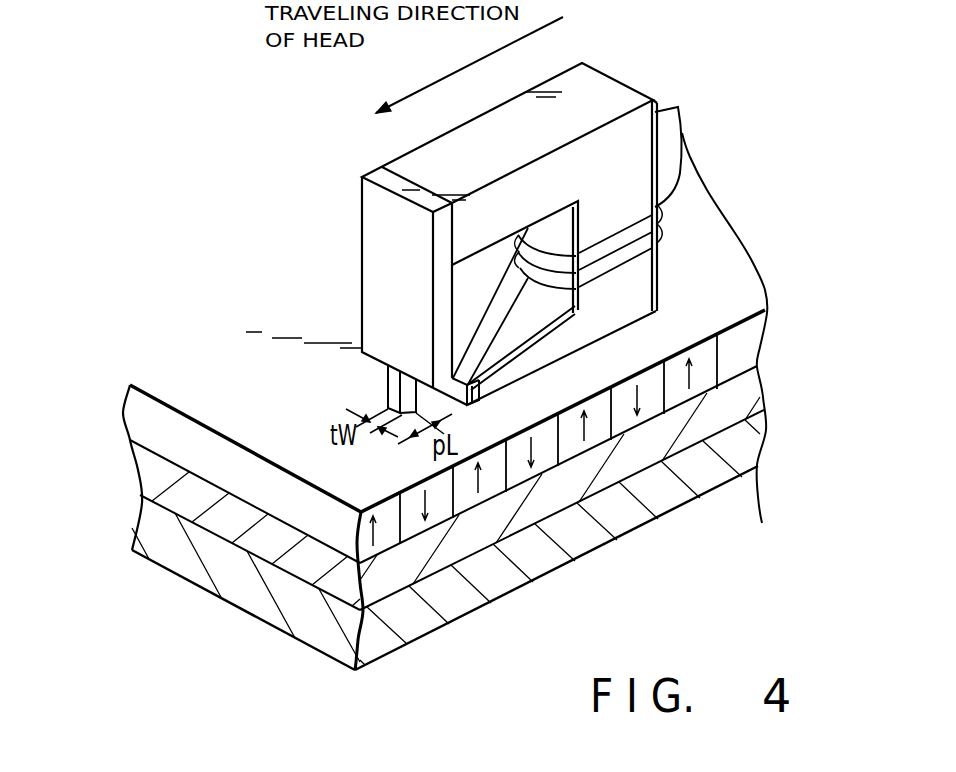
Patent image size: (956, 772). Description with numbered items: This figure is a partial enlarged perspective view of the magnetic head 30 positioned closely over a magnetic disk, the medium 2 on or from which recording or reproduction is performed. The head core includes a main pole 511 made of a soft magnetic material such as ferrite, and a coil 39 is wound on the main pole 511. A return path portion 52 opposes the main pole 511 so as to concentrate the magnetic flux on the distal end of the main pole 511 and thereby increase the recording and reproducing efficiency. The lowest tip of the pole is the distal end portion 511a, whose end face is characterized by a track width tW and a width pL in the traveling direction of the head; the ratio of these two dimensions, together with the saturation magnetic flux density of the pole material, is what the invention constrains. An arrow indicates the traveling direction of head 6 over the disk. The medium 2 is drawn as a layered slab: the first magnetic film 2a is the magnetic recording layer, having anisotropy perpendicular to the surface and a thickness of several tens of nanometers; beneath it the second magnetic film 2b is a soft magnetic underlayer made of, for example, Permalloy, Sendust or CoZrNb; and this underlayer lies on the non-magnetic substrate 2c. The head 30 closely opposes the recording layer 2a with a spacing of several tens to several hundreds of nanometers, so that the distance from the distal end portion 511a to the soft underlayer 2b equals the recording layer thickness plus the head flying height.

The medium 2 is at (458, 401).
The first magnetic film 2a is at (454, 348).
The second magnetic film 2b is at (709, 392).
The non-magnetic substrate 2c is at (446, 545).
The traveling direction of head 6 is at (562, 18).
The magnetic head 30 is at (697, 25).
The coil 39 is at (683, 124).
The return path portion 52 is at (610, 88).
The main pole 511 is at (382, 234).
The distal end portion 511a is at (388, 389).